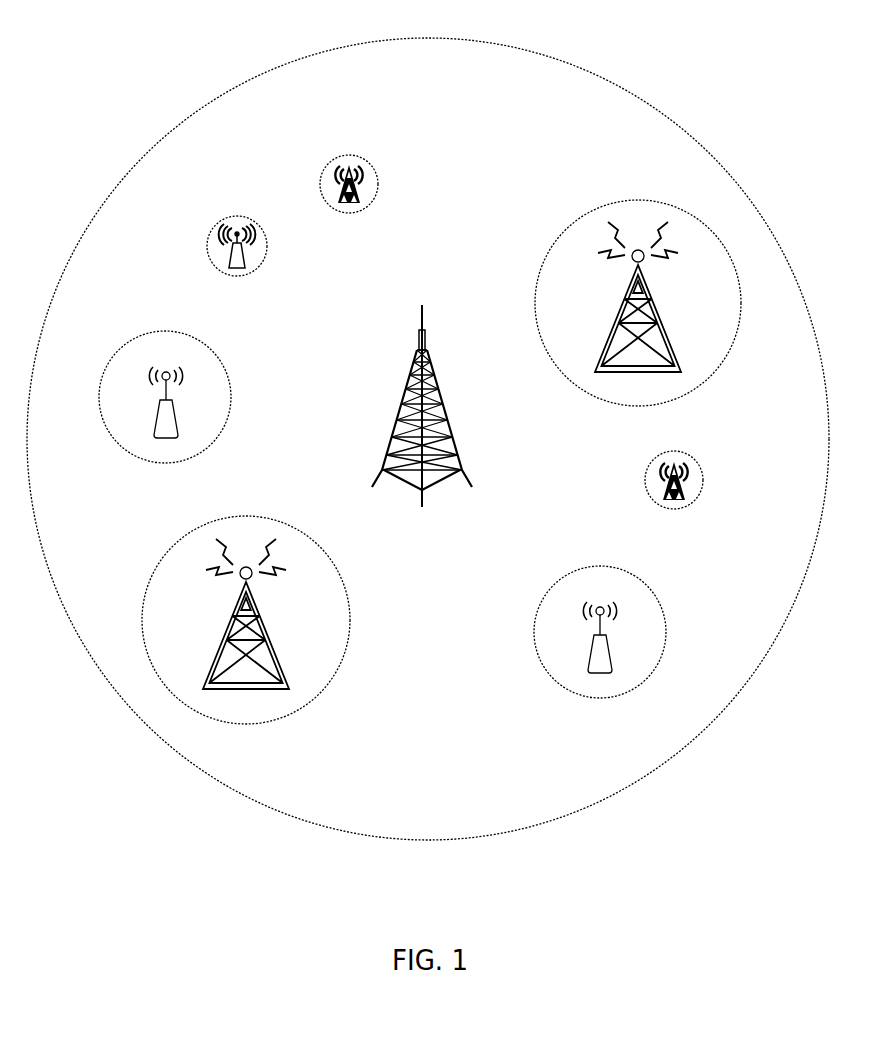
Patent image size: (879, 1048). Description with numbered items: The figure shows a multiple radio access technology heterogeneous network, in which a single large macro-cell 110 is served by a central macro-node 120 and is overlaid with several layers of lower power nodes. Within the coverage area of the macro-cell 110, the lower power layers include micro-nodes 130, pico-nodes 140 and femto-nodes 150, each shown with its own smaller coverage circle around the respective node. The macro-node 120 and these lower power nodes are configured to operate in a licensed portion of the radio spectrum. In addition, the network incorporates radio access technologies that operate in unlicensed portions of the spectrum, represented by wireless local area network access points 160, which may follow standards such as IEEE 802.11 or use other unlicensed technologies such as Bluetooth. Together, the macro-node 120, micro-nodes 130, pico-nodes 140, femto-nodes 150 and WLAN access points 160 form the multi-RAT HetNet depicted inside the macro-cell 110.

The macro-cell 110 is at (214, 97).
The macro-node 120 is at (407, 390).
The micro-nodes 130 is at (587, 212).
The pico-nodes 140 is at (587, 640).
The femto-nodes 150 is at (645, 478).
The wireless local area network access points 160 is at (211, 232).